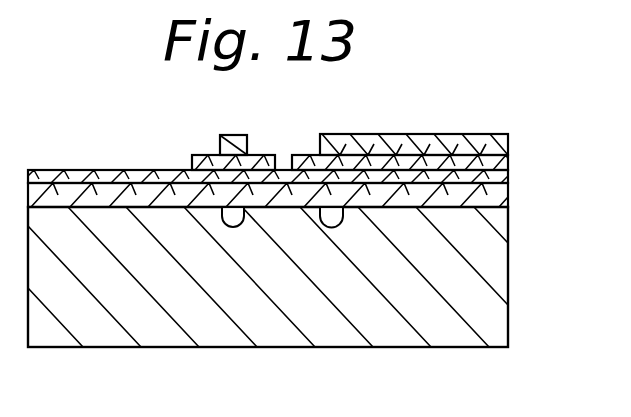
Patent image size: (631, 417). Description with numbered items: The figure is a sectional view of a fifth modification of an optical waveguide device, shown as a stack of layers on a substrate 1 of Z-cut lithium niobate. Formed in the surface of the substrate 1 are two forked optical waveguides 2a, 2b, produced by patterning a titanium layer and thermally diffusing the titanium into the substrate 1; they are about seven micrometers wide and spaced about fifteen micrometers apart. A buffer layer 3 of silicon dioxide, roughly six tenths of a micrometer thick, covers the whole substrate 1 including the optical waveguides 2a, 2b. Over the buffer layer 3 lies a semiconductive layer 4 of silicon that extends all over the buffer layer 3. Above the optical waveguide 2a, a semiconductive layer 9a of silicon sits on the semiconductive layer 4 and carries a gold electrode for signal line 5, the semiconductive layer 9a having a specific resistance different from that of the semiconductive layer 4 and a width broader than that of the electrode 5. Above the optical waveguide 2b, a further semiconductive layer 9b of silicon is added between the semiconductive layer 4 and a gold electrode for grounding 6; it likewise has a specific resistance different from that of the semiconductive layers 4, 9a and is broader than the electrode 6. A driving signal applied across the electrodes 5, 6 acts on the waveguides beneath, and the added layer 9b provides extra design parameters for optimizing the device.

The substrate 1 is at (488, 278).
The forked optical waveguide 2a is at (233, 228).
The forked optical waveguide 2b is at (332, 228).
The buffer layer 3 is at (507, 193).
The semiconductive layer 4 is at (82, 170).
The electrode for signal line 5 is at (230, 135).
The electrode for grounding 6 is at (398, 133).
The semiconductive layer 9a is at (200, 153).
The semiconductive layer 9b is at (508, 160).